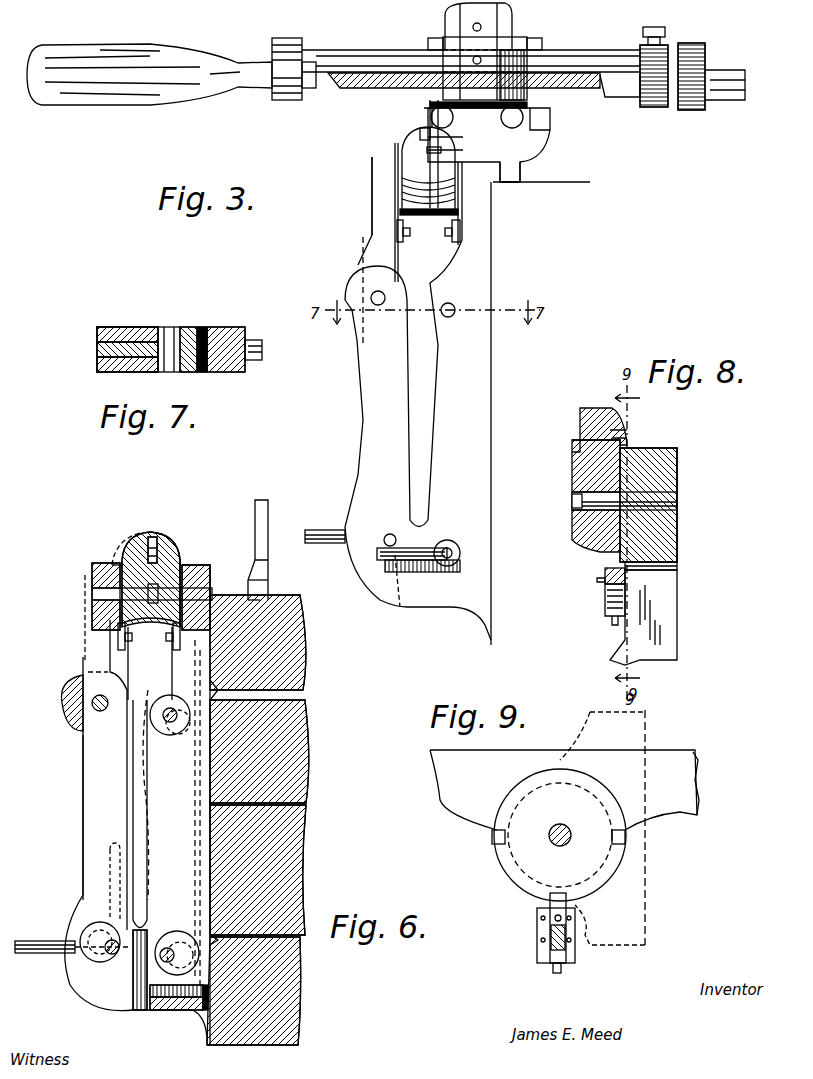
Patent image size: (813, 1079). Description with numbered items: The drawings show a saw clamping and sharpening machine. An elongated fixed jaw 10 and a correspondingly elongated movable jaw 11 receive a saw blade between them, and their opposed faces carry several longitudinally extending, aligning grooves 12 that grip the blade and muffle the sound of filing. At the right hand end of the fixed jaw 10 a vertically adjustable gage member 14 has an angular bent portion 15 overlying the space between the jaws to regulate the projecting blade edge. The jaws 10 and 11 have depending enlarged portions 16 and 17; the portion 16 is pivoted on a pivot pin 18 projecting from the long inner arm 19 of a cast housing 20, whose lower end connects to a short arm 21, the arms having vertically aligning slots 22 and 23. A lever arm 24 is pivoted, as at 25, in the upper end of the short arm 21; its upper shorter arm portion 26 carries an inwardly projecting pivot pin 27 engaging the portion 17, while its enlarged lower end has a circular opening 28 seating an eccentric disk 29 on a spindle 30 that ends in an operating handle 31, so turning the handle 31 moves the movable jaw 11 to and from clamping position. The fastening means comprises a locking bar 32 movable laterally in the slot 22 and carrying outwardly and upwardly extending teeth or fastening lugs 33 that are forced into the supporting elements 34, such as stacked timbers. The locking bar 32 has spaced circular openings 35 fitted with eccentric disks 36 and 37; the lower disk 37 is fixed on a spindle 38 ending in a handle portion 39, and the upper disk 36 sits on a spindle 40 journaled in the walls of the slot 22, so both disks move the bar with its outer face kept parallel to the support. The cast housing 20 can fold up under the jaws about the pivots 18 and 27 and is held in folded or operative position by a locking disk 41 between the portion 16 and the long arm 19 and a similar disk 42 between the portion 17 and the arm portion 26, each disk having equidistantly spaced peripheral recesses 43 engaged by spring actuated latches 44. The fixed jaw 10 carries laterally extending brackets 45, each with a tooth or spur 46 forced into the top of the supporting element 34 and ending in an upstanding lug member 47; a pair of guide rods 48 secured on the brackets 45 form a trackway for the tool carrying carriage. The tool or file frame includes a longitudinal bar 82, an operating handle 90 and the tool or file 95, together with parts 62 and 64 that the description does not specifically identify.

In FIG. 3, the fixed jaw 10 is at (448, 137).
In FIG. 8, the fixed jaw 10 is at (574, 462).
In FIG. 9, the fixed jaw 10 is at (688, 750).
In FIG. 6, the fixed jaw 10 is at (168, 537).
In FIG. 3, the movable jaw 11 is at (402, 148).
In FIG. 6, the movable jaw 11 is at (133, 540).
In FIG. 3, the grooves 12 is at (420, 134).
In FIG. 8, the grooves 12 is at (575, 435).
In FIG. 6, the grooves 12 is at (152, 532).
In FIG. 3, the gage member 14 is at (448, 151).
In FIG. 3, the angular bent portion 15 is at (424, 112).
In FIG. 3, the depending enlarged portion 16 is at (458, 208).
In FIG. 8, the depending enlarged portion 16 is at (590, 547).
In FIG. 9, the depending enlarged portion 16 is at (605, 868).
In FIG. 6, the depending enlarged portion 16 is at (165, 630).
In FIG. 3, the depending enlarged portion 17 is at (415, 200).
In FIG. 6, the depending enlarged portion 17 is at (122, 612).
In FIG. 8, the pivot pin 18 is at (572, 502).
In FIG. 9, the pivot pin 18 is at (553, 840).
In FIG. 6, the pivot pin 18 is at (200, 580).
In FIG. 3, the long arm 19 is at (478, 360).
In FIG. 7, the long arm 19 is at (220, 327).
In FIG. 8, the long arm 19 is at (680, 518).
In FIG. 6, the long arm 19 is at (210, 640).
In FIG. 3, the cast housing 20 is at (445, 598).
In FIG. 6, the cast housing 20 is at (140, 1010).
In FIG. 3, the short arm 21 is at (364, 395).
In FIG. 7, the short arm 21 is at (130, 327).
In FIG. 6, the short arm 21 is at (75, 728).
In FIG. 7, the slot 22 is at (240, 372).
In FIG. 8, the slot 22 is at (680, 566).
In FIG. 6, the slot 22 is at (203, 1012).
In FIG. 7, the slot 23 is at (125, 372).
In FIG. 6, the slot 23 is at (83, 760).
In FIG. 7, the lever arm 24 is at (97, 347).
In FIG. 6, the lever arm 24 is at (90, 845).
In FIG. 3, the pivot 25 is at (372, 292).
In FIG. 6, the pivot 25 is at (95, 700).
In FIG. 3, the upper shorter arm portion 26 is at (378, 180).
In FIG. 6, the upper shorter arm portion 26 is at (94, 563).
In FIG. 6, the pivot pin 27 is at (92, 593).
In FIG. 6, the circular opening 28 is at (85, 928).
In FIG. 6, the eccentric disk 29 is at (95, 955).
In FIG. 3, the spindle 30 is at (386, 534).
In FIG. 6, the spindle 30 is at (113, 955).
In FIG. 3, the operating handle 31 is at (320, 528).
In FIG. 6, the operating handle 31 is at (47, 955).
In FIG. 8, the locking bar 32 is at (665, 645).
In FIG. 6, the locking bar 32 is at (198, 860).
In FIG. 6, the fastening lugs 33 is at (215, 688).
In FIG. 6, the supporting element 34 is at (300, 598).
In FIG. 6, the circular openings 35 is at (166, 710).
In FIG. 6, the eccentric disk 36 is at (165, 695).
In FIG. 6, the eccentric disk 37 is at (215, 1010).
In FIG. 3, the spindle 38 is at (460, 553).
In FIG. 6, the spindle 38 is at (168, 1010).
In FIG. 3, the handle portion 39 is at (402, 595).
In FIG. 3, the spindle 40 is at (454, 306).
In FIG. 3, the locking disk 41 is at (464, 190).
In FIG. 8, the locking disk 41 is at (630, 455).
In FIG. 9, the locking disk 41 is at (525, 890).
In FIG. 6, the locking disk 41 is at (184, 585).
In FIG. 3, the locking disk 42 is at (410, 190).
In FIG. 6, the locking disk 42 is at (116, 555).
In FIG. 9, the peripheral recesses 43 is at (492, 838).
In FIG. 3, the spring actuated latches 44 is at (450, 242).
In FIG. 8, the spring actuated latches 44 is at (606, 602).
In FIG. 9, the spring actuated latches 44 is at (548, 952).
In FIG. 6, the spring actuated latches 44 is at (118, 640).
In FIG. 3, the brackets 45 is at (520, 147).
In FIG. 6, the brackets 45 is at (250, 556).
In FIG. 3, the spur 46 is at (522, 172).
In FIG. 6, the spur 46 is at (250, 578).
In FIG. 3, the lug members 47 is at (540, 121).
In FIG. 6, the lug members 47 is at (262, 500).
In FIG. 3, the guide rods 48 is at (432, 111).
In FIG. 3, the cap 62 is at (490, 22).
In FIG. 3, the housing 64 is at (445, 27).
In FIG. 3, the longitudinal bar 82 is at (555, 60).
In FIG. 3, the operating handle 90 is at (128, 95).
In FIG. 3, the file 95 is at (358, 88).